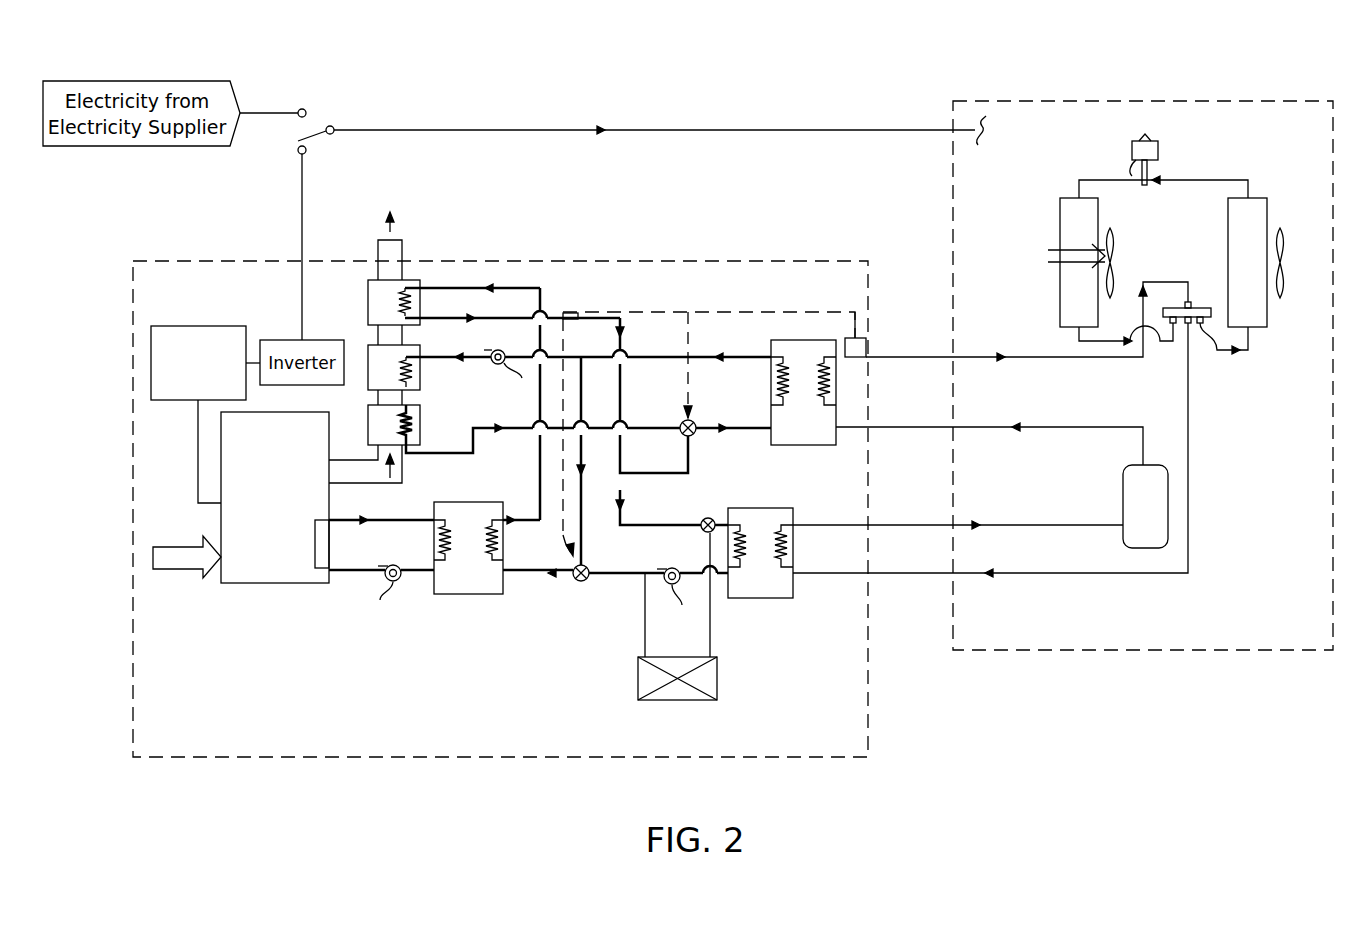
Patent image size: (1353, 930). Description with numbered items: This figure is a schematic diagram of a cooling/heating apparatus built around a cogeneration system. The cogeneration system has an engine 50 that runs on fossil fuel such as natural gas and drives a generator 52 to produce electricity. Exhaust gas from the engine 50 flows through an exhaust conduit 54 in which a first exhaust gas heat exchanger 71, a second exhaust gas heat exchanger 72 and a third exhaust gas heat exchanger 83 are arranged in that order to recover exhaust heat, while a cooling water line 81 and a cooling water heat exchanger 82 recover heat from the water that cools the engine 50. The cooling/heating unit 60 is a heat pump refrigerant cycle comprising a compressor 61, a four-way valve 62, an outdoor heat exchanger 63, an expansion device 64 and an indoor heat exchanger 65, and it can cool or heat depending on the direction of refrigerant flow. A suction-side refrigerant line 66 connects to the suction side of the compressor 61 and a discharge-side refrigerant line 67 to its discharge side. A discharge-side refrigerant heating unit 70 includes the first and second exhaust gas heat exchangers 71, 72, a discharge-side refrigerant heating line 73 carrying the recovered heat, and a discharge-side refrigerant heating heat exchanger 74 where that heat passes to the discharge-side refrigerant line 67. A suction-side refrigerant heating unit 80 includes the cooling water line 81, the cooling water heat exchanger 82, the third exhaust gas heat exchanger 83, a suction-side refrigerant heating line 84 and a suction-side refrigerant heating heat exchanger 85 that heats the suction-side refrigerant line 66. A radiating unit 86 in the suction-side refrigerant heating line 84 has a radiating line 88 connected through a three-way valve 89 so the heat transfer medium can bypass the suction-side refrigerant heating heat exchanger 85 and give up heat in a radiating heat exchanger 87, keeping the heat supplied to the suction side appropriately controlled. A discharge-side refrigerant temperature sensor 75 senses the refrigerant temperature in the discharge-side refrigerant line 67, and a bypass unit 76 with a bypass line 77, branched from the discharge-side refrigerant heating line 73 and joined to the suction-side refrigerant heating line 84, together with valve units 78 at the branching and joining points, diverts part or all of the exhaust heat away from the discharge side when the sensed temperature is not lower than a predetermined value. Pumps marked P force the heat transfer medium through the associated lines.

The engine 50 is at (258, 571).
The generator 52 is at (213, 337).
The exhaust conduit 54 is at (382, 335).
The cooling/heating unit 60 is at (1133, 95).
The compressor 61 is at (1168, 530).
The 4-way valve 62 is at (1213, 335).
The outdoor heat exchanger 63 is at (1070, 212).
The expansion device 64 is at (1150, 148).
The indoor heat exchanger 65 is at (1262, 240).
The suction-side refrigerant line 66 is at (965, 578).
The discharge-side refrigerant line 67 is at (985, 355).
The discharge-side refrigerant heating unit 70 is at (676, 345).
The first exhaust gas heat exchanger 71 is at (418, 415).
The second exhaust gas heat exchanger 72 is at (418, 380).
The discharge-side refrigerant heating line 73 is at (445, 351).
The discharge-side refrigerant heating heat exchanger 74 is at (803, 440).
The discharge-side refrigerant temperature sensor 75 is at (866, 346).
The bypass unit 76 is at (722, 522).
The bypass line 77 is at (583, 500).
The valve unit 78 is at (694, 436).
The suction-side refrigerant heating unit 80 is at (562, 592).
The cooling water line 81 is at (358, 572).
The cooling water heat exchanger 82 is at (465, 590).
The third exhaust gas heat exchanger 83 is at (412, 296).
The suction-side refrigerant heating line 84 is at (577, 312).
The suction-side refrigerant heating heat exchanger 85 is at (780, 595).
The radiating unit 86 is at (722, 643).
The radiating heat exchanger 87 is at (695, 694).
The radiating line 88 is at (712, 620).
The 3-way valve 89 is at (700, 532).